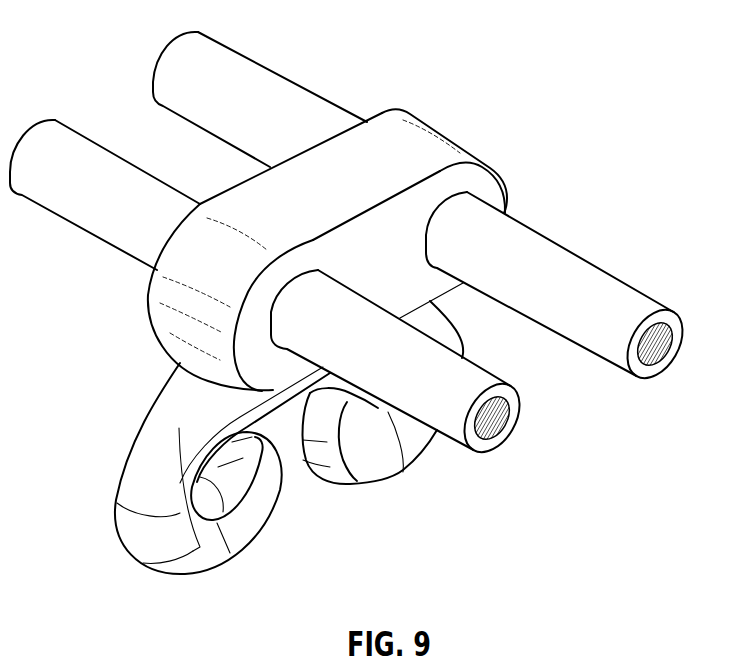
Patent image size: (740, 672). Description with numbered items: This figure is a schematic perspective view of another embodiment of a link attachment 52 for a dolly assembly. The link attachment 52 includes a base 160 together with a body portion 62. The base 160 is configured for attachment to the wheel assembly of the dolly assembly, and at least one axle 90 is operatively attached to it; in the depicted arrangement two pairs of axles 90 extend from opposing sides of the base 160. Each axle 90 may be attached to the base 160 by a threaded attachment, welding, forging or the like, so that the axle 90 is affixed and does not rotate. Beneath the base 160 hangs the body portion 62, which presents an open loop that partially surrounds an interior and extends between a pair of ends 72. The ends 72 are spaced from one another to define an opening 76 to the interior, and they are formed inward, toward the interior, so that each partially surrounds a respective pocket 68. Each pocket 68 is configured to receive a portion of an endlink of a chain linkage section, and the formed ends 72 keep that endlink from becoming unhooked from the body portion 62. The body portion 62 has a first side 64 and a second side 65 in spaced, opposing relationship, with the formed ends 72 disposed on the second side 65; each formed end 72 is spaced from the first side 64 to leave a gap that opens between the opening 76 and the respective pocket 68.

The link attachment 52 is at (100, 41).
The axle 90 is at (268, 82).
The base 160 is at (487, 187).
The body portion 62 is at (427, 320).
The first side 64 is at (203, 411).
The pocket 68 is at (194, 456).
The end 72 is at (268, 477).
The second side 65 is at (228, 553).
The opening 76 is at (296, 492).